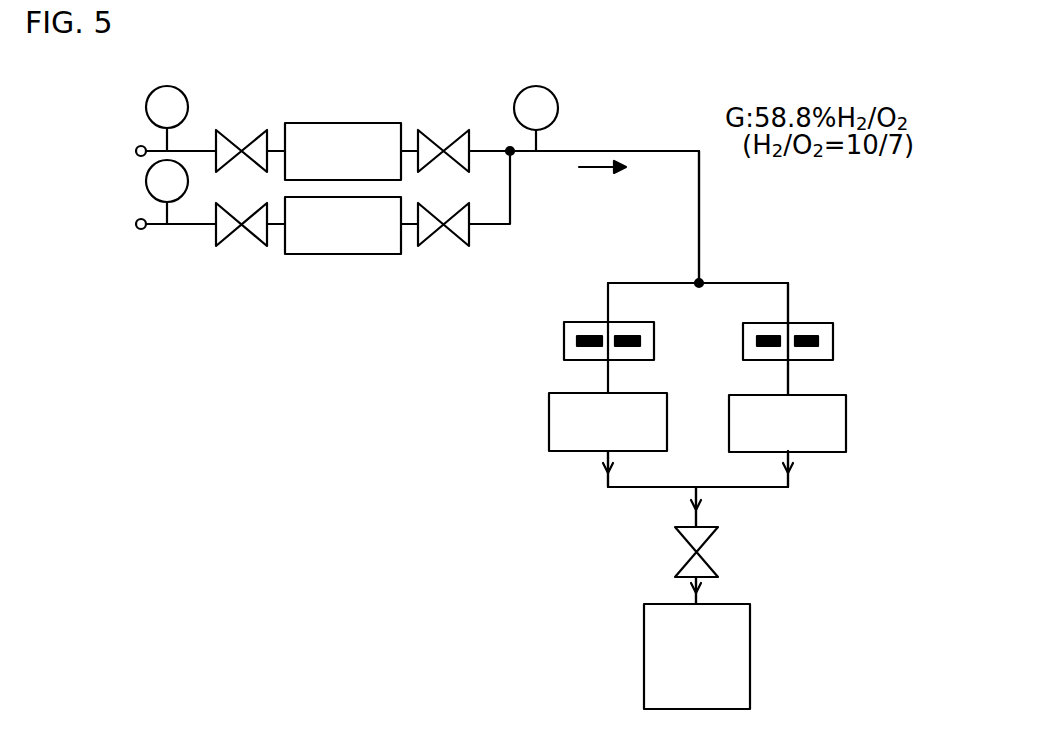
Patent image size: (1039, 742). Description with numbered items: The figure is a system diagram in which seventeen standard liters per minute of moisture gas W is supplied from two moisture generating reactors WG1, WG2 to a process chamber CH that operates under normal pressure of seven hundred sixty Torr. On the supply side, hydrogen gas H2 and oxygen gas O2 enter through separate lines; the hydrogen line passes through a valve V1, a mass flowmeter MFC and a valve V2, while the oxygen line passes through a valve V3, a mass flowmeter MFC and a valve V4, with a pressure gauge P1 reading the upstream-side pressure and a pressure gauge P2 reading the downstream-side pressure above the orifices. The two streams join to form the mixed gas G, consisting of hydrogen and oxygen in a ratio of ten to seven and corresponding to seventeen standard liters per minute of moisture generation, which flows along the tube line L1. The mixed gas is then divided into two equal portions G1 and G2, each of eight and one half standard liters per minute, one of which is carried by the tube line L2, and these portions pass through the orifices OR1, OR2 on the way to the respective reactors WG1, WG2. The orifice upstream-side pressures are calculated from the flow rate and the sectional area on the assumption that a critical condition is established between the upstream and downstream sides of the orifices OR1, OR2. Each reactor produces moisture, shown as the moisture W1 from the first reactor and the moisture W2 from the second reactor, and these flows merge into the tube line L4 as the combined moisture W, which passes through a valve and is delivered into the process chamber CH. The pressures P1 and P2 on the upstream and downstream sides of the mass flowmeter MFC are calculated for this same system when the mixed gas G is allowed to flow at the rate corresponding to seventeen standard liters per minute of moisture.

The hydrogen gas H2 is at (123, 150).
The oxygen gas O2 is at (122, 223).
The upstream-side pressure gauge P1 is at (167, 118).
The downstream-side pressure gauge P2 is at (352, 155).
The valve V1 is at (237, 138).
The valve V2 is at (442, 138).
The valve V3 is at (238, 232).
The valve V4 is at (441, 232).
The mass flowmeter MFC is at (343, 188).
The mixed gas G is at (553, 156).
The divided gas flow (8.5 SLM) G1 is at (666, 288).
The divided gas flow (8.5 SLM) G2 is at (726, 288).
The tube line L1 is at (699, 185).
The tube line L2 is at (788, 293).
The tube line L4 is at (689, 497).
The orifice OR1 is at (564, 334).
The orifice OR2 is at (833, 335).
The moisture generating reactor WG1 is at (549, 420).
The moisture generating reactor WG2 is at (846, 423).
The moisture W1 is at (613, 467).
The moisture W2 is at (793, 467).
The moisture W is at (723, 582).
The process chamber CH is at (750, 660).